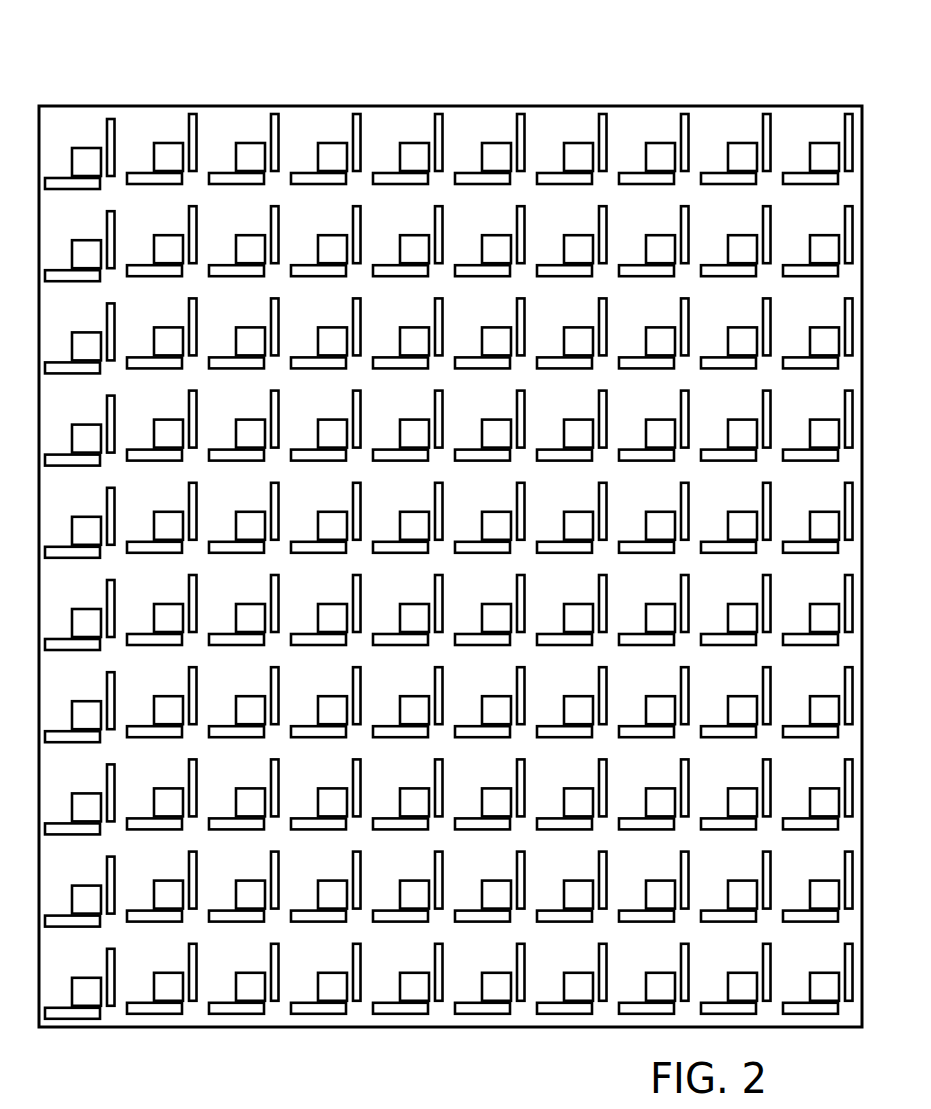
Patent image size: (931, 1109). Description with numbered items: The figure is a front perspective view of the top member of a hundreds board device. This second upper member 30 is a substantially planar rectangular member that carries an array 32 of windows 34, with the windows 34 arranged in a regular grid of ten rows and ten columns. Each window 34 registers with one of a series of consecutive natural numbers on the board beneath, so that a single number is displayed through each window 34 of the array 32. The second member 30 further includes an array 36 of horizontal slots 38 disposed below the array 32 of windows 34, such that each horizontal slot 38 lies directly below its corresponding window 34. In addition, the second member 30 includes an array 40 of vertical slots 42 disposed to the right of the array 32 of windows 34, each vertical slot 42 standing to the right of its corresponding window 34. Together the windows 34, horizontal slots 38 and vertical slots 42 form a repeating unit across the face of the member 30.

The second upper member 30 is at (628, 128).
The array of windows 32 is at (555, 87).
The window 34 is at (323, 142).
The array of horizontal slots 36 is at (142, 160).
The horizontal slot 38 is at (128, 174).
The array of vertical slots 40 is at (191, 92).
The vertical slot 42 is at (193, 123).